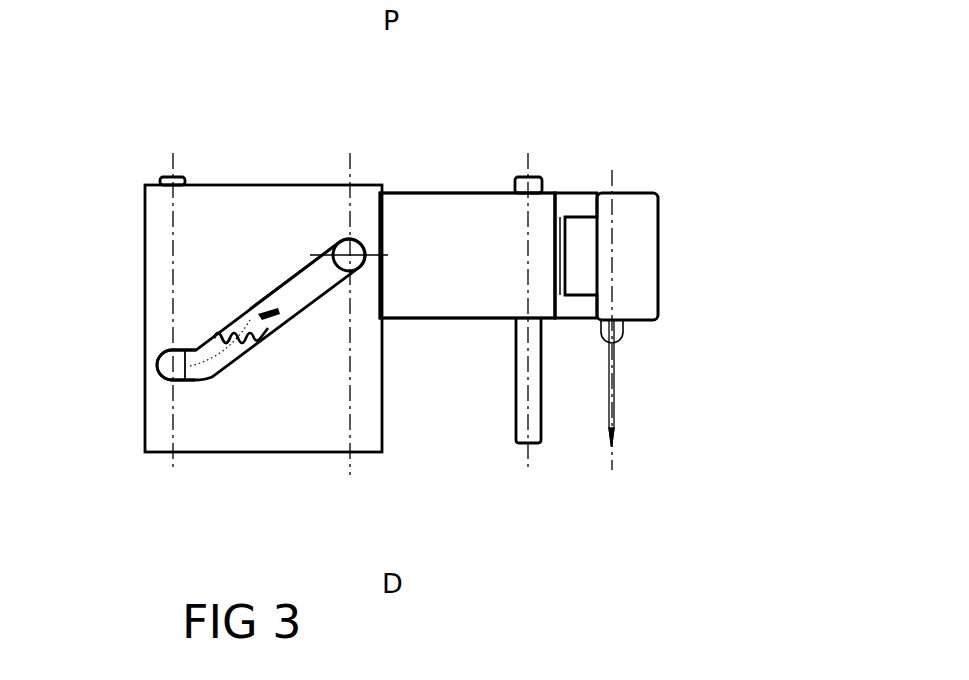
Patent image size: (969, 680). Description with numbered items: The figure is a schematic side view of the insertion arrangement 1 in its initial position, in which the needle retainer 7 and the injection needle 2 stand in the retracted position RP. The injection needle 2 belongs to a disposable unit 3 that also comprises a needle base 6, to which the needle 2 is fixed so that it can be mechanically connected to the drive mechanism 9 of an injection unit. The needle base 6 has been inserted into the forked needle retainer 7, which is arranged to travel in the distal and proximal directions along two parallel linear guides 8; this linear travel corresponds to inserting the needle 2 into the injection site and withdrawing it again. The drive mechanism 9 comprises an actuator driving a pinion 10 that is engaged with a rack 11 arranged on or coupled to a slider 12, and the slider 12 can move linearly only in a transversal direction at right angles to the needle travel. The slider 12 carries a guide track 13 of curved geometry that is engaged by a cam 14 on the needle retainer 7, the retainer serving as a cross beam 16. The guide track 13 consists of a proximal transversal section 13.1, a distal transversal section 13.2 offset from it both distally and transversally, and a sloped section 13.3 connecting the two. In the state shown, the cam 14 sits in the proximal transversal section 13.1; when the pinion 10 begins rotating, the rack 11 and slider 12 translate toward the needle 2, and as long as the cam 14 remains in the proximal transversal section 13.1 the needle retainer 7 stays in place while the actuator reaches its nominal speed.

The insertion arrangement 1 is at (438, 130).
The injection needle 2 is at (613, 415).
The disposable unit 3 is at (677, 305).
The needle base 6 is at (645, 243).
The needle retainer 7 is at (460, 197).
The cross beam 16 is at (467, 255).
The linear guides 8 is at (165, 178).
The drive mechanism 9 is at (362, 460).
The pinion 10 is at (257, 330).
The rack 11 is at (225, 337).
The slider 12 is at (247, 188).
The guide track 13 is at (238, 308).
The proximal transversal section 13.1 is at (157, 365).
The distal transversal section 13.2 is at (387, 185).
The sloped section 13.3 is at (245, 280).
The cam 14 is at (320, 185).
The retracted position RP is at (637, 332).